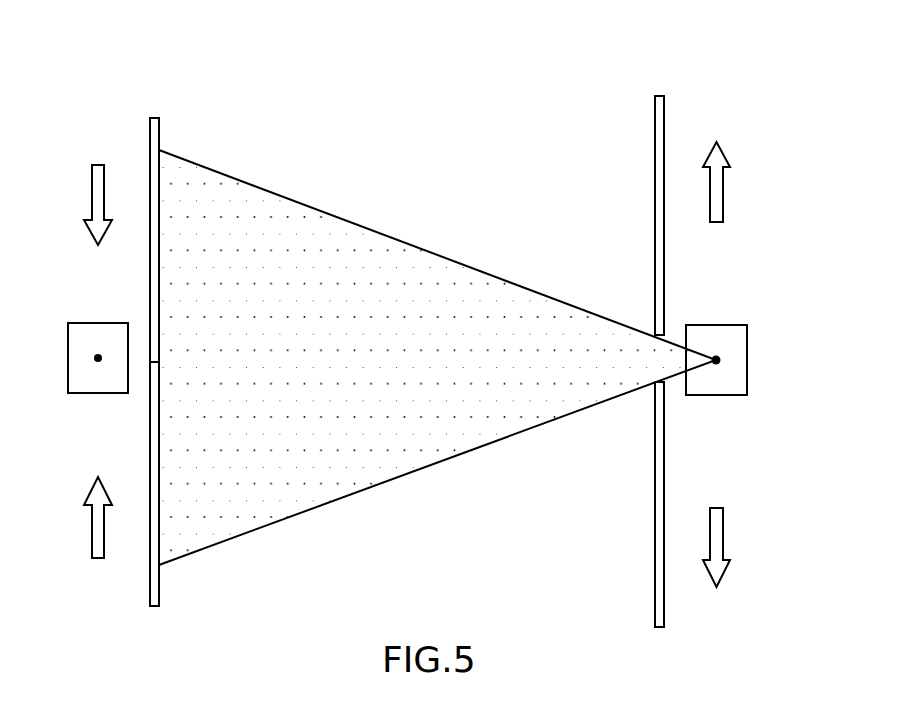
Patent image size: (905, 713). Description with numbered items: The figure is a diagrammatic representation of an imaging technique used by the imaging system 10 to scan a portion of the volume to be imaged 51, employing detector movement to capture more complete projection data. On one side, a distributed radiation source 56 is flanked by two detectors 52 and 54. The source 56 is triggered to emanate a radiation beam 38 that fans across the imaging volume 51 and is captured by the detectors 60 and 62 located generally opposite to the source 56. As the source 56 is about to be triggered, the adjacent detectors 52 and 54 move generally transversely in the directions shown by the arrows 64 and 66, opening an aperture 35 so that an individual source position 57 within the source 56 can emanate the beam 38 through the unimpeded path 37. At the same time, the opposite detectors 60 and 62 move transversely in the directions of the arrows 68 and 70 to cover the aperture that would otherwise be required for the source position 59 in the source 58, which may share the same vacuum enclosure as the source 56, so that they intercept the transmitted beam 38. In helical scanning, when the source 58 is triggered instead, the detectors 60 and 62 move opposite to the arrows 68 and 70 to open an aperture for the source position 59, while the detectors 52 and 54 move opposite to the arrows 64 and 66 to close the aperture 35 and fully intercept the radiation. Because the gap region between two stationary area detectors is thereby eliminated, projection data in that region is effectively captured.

The imaging system 10 is at (712, 33).
The aperture 35 is at (690, 347).
The unimpeded path 37 is at (672, 370).
The radiation beam 38 is at (397, 455).
The portion of volume to be imaged 51 is at (433, 197).
The detector 52 is at (655, 128).
The detector 54 is at (655, 560).
The distributed radiation source 56 is at (748, 352).
The individual source position 57 is at (716, 355).
The source 58 is at (68, 357).
The source position 59 is at (98, 360).
The detector 60 is at (150, 128).
The detector 62 is at (150, 586).
The arrow 64 is at (724, 193).
The arrow 66 is at (724, 530).
The arrow 68 is at (91, 190).
The arrow 70 is at (91, 545).